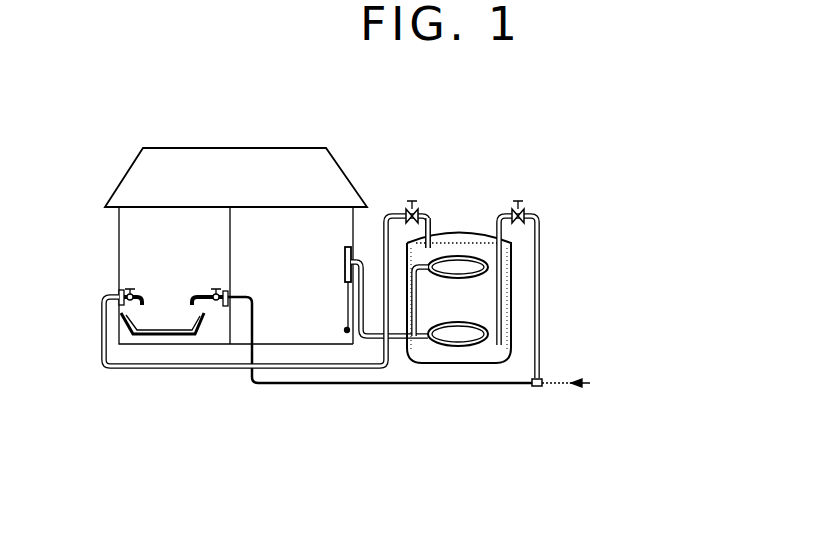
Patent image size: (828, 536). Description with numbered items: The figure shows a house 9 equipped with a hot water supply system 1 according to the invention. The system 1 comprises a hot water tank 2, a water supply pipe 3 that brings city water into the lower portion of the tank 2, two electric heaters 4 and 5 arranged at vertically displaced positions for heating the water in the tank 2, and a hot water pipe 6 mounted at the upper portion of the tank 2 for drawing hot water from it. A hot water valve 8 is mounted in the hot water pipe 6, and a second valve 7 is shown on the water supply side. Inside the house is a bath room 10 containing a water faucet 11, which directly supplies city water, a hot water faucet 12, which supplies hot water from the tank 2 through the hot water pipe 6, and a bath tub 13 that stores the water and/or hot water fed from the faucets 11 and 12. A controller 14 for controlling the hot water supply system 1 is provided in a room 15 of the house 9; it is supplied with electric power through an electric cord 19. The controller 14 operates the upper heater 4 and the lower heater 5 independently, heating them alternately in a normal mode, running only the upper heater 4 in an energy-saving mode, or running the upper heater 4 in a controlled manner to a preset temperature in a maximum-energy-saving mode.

The hot water supply system 1 is at (503, 269).
The hot water tank 2 is at (512, 320).
The water supply pipe 3 is at (504, 282).
The upper electric heater 4 is at (474, 257).
The lower electric heater 5 is at (447, 350).
The hot water pipe 6 is at (427, 214).
The city water valve 7 is at (518, 202).
The hot water valve 8 is at (410, 202).
The house 9 is at (298, 148).
The bath room 10 is at (157, 230).
The water faucet 11 is at (205, 288).
The hot water faucet 12 is at (133, 288).
The bath tub 13 is at (203, 328).
The controller 14 is at (344, 265).
The room 15 is at (320, 228).
The electric cord 19 is at (340, 318).